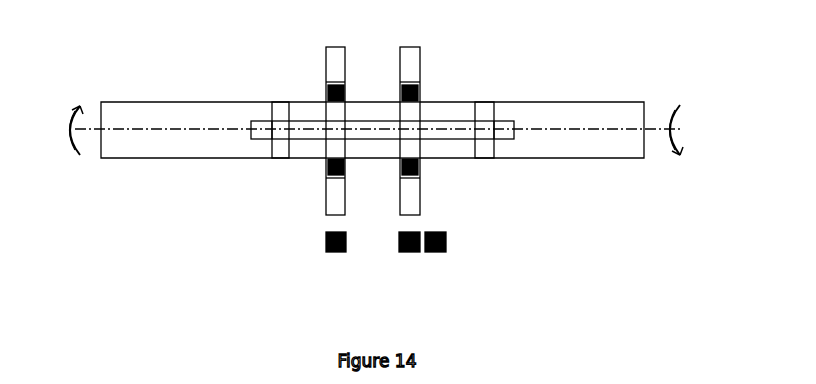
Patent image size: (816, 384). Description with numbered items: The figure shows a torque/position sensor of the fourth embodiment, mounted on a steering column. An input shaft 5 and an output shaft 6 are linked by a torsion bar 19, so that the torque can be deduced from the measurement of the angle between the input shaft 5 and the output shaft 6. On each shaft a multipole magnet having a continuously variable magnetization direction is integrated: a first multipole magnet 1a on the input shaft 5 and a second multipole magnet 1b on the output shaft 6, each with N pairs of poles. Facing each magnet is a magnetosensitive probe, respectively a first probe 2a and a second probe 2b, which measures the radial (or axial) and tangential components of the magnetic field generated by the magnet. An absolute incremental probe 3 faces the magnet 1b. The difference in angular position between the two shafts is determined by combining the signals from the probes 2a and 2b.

The torsion bar 19 is at (392, 123).
The input shaft 5 is at (213, 157).
The output shaft 6 is at (600, 158).
The multipole magnet 1a is at (342, 188).
The multipole magnet 1b is at (428, 188).
The magnetosensitive probe 2a is at (343, 256).
The magnetosensitive probe 2b is at (411, 256).
The absolute incremental probe 3 is at (457, 255).